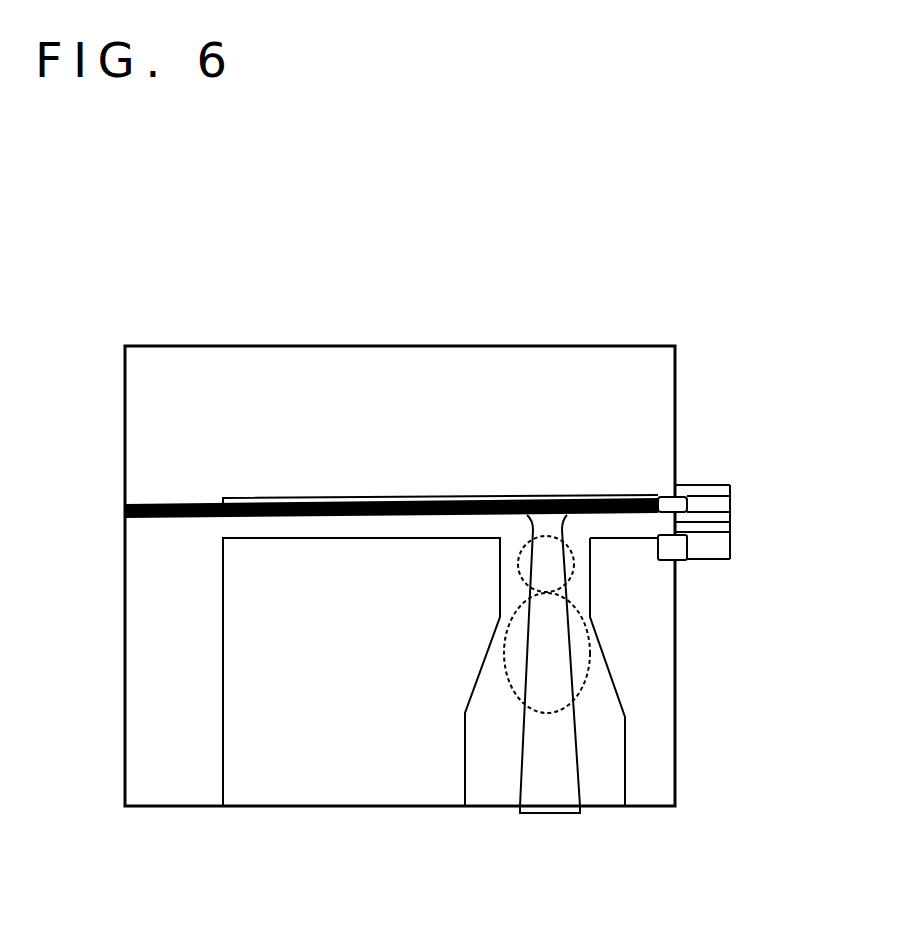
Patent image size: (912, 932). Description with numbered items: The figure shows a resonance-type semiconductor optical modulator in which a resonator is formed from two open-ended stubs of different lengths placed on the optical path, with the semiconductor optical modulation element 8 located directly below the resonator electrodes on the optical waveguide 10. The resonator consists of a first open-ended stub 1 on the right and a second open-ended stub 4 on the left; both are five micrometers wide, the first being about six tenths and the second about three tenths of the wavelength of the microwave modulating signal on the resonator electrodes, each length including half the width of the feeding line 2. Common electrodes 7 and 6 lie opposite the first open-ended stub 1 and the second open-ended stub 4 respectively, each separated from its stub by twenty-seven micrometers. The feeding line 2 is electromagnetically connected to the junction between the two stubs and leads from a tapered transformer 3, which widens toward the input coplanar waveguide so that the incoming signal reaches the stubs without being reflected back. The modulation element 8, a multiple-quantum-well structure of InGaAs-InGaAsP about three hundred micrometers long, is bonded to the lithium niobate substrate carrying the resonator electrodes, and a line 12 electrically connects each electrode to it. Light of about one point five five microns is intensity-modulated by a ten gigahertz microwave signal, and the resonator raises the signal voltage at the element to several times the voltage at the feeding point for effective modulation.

The first open-ended stub 1 is at (658, 387).
The feeding line 2 is at (556, 496).
The tapered transformer 3 is at (547, 721).
The second open-ended stub 4 is at (440, 383).
The common electrode 6 is at (286, 790).
The common electrode 7 is at (650, 774).
The semiconductor optical modulation element 8 is at (742, 410).
The optical waveguide 10 is at (198, 481).
The line 12 is at (698, 565).